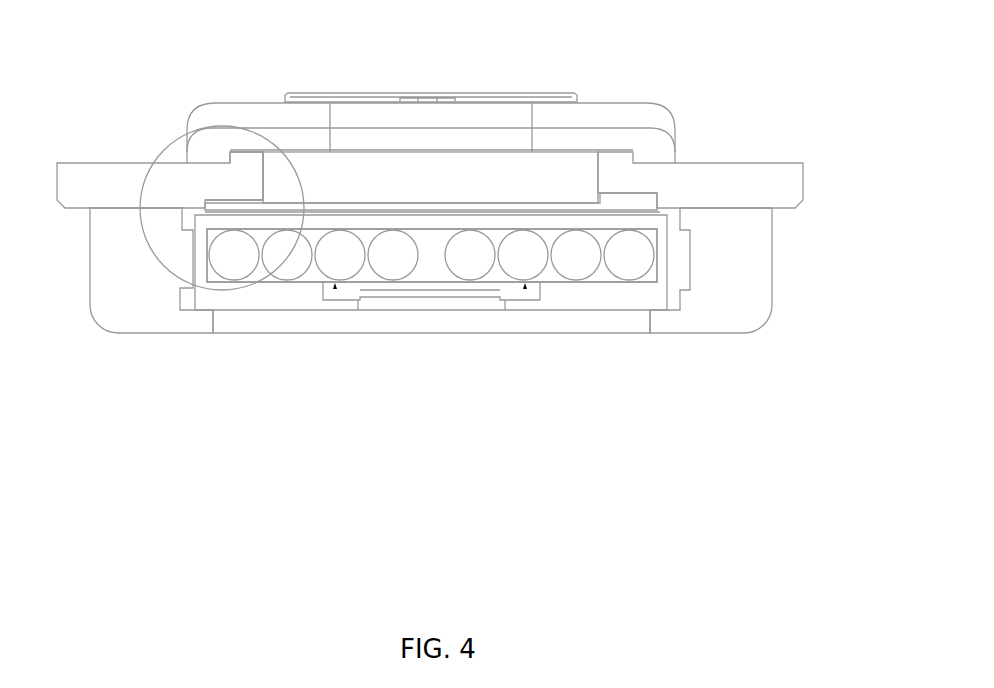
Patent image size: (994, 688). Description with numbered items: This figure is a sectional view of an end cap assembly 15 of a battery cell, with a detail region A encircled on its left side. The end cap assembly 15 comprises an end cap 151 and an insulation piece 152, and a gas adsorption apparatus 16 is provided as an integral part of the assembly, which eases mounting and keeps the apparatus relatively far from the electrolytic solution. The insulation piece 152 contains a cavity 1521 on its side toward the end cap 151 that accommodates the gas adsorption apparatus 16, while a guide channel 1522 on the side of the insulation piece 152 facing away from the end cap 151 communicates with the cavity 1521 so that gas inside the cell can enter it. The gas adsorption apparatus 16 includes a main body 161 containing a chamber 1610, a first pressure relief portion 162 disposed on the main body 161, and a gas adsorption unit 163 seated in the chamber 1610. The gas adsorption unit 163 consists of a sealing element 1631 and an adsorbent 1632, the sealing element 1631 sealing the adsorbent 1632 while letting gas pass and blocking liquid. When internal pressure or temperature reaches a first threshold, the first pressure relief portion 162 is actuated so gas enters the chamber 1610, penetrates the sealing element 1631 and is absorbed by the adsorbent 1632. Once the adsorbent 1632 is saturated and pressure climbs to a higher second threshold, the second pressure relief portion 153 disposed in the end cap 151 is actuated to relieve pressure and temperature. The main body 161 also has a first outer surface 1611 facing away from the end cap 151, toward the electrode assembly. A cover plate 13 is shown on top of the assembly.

The cover plate 13 is at (550, 68).
The end cap assembly 15 is at (437, 251).
The end cap 151 is at (740, 177).
The insulation piece 152 is at (433, 332).
The cavity 1521 is at (684, 328).
The guide channel 1522 is at (640, 350).
The second pressure relief portion 153 is at (238, 174).
The gas adsorption apparatus 16 is at (431, 387).
The main body 161 is at (295, 303).
The first outer surface 1611 is at (257, 336).
The first pressure relief portion 162 is at (422, 293).
The chamber 1610 is at (447, 290).
The gas adsorption unit 163 is at (431, 371).
The sealing element 1631 is at (580, 280).
The adsorbent 1632 is at (562, 278).
The detail region A is at (152, 253).